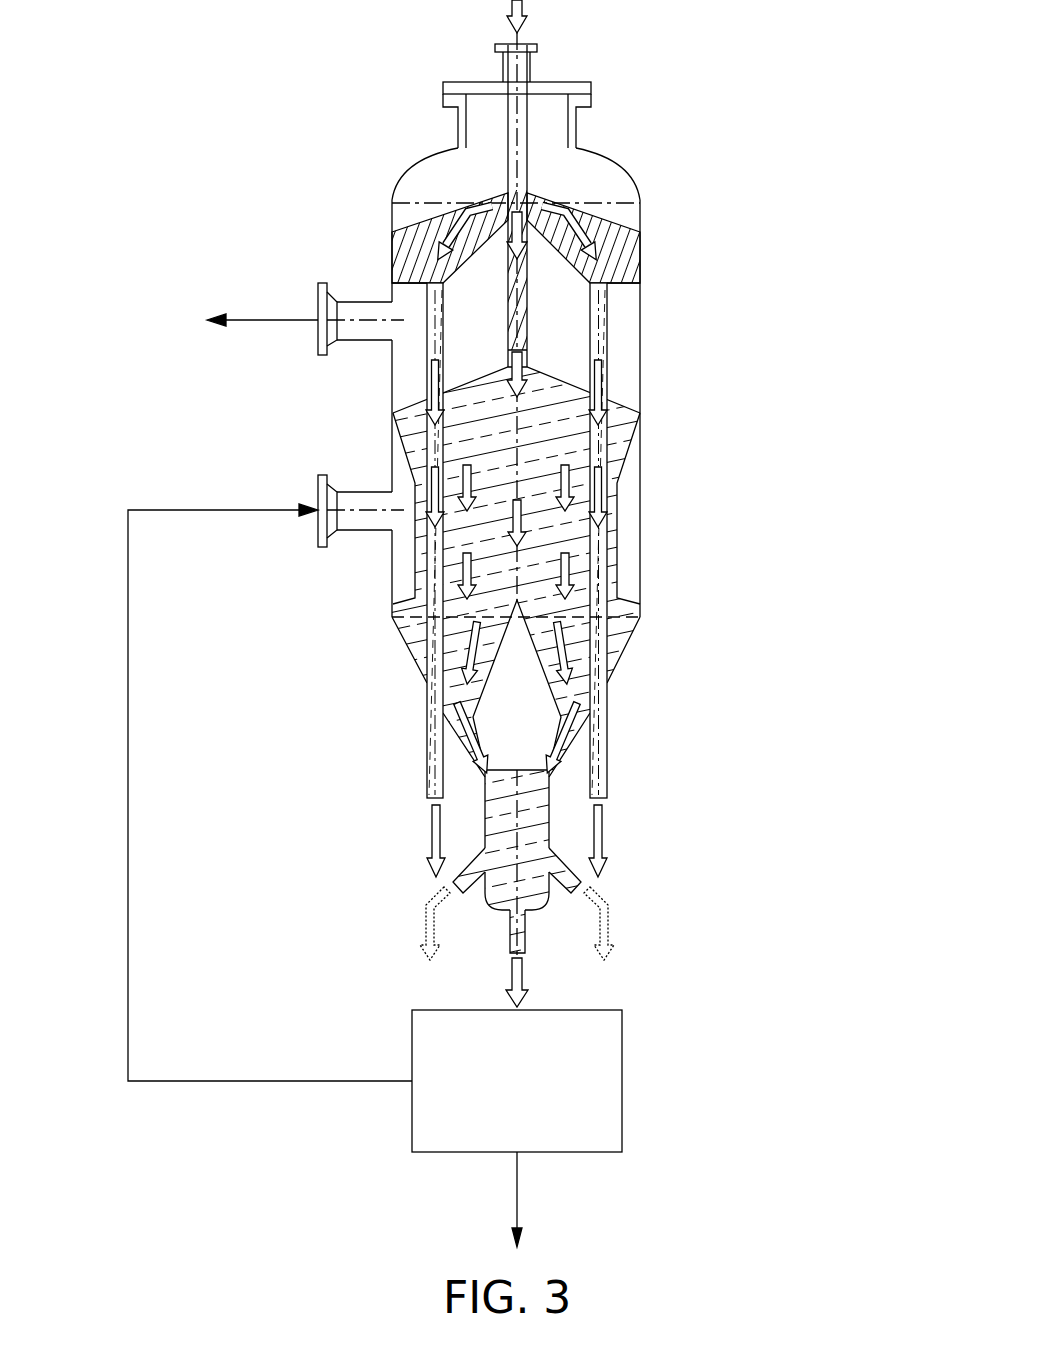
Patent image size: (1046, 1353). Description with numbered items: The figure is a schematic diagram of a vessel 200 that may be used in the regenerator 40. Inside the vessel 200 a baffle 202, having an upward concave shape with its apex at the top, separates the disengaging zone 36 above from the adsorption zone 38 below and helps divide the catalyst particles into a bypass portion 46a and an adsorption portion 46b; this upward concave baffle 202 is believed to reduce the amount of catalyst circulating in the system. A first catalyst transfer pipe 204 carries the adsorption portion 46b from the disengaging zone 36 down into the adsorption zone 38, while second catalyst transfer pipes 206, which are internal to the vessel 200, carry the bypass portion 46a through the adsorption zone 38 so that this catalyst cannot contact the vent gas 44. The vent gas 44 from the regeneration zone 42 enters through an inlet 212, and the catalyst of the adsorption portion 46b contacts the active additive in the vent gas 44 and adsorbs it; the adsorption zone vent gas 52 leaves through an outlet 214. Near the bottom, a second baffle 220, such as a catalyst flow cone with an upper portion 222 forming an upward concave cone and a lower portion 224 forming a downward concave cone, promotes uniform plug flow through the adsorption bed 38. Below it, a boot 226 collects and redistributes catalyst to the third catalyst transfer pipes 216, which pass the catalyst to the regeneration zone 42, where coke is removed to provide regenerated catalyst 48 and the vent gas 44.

The regenerator 40 is at (808, 86).
The disengaging zone 36 is at (572, 165).
The vessel 200 is at (643, 205).
The baffle 202 is at (487, 213).
The first catalyst transfer pipe 204 is at (528, 335).
The second catalyst transfer pipes 206 is at (605, 310).
The adsorption zone 38 is at (543, 542).
The second baffle 220 is at (498, 690).
The upper portion 222 is at (535, 658).
The lower portion 224 is at (535, 728).
The boot 226 is at (548, 827).
The third catalyst transfer pipes 216 is at (466, 866).
The bypass portion 46a is at (430, 477).
The adsorption portion 46b is at (530, 370).
The adsorption zone vent gas 52 is at (277, 317).
The outlet 214 is at (357, 342).
The inlet 212 is at (360, 532).
The vent gas 44 is at (291, 1080).
The regeneration zone 42 is at (603, 1010).
The regenerated catalyst 48 is at (519, 1200).